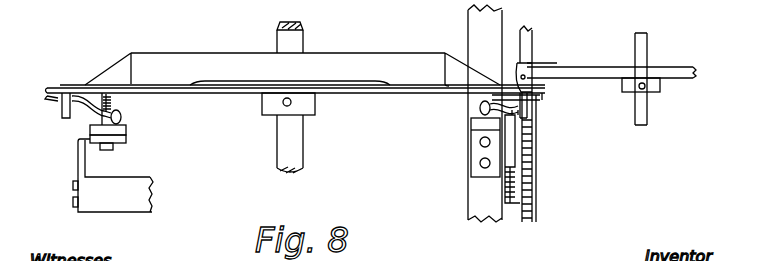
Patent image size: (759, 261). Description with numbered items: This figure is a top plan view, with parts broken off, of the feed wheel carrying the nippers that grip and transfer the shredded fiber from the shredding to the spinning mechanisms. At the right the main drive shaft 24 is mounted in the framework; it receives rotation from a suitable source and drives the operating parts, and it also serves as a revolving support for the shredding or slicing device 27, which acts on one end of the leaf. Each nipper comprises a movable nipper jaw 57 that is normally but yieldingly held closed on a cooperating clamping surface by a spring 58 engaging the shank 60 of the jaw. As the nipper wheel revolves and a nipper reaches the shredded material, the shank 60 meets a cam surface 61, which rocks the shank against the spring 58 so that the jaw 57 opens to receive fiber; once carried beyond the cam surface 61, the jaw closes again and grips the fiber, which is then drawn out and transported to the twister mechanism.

The main drive shaft 24 is at (637, 48).
The shredding or slicing device 27 is at (602, 73).
The movable nipper jaw 57 is at (54, 98).
The spring 58 is at (113, 105).
The shank 60 is at (82, 110).
The cam surface 61 is at (470, 122).